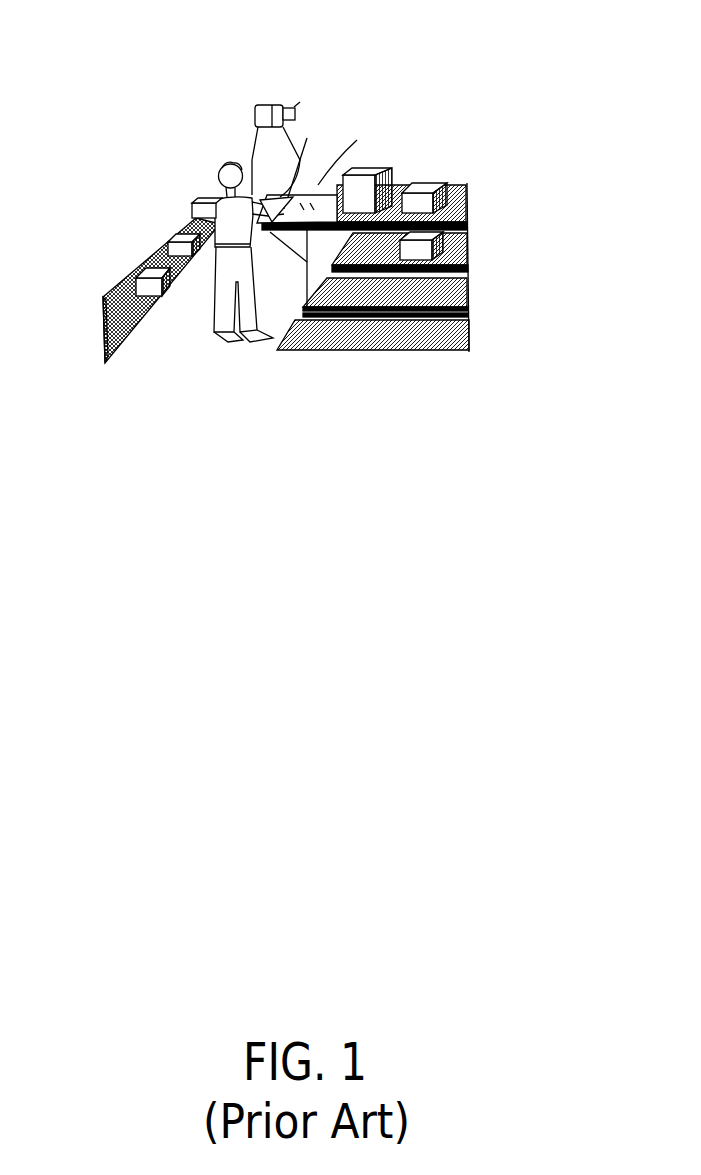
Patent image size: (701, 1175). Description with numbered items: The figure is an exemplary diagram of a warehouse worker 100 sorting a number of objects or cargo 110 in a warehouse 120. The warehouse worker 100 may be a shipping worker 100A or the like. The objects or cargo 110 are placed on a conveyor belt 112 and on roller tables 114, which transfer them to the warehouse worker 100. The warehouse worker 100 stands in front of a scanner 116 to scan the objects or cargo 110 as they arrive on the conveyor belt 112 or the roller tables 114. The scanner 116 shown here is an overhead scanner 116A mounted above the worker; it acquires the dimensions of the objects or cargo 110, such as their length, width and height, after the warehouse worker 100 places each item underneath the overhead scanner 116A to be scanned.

The warehouse worker 100 is at (210, 197).
The shipping worker 100A is at (187, 222).
The objects or cargo 110 is at (103, 243).
The conveyor belt 112 is at (471, 232).
The roller tables 114 is at (471, 283).
The scanner 116 is at (262, 107).
The overhead scanner 116A is at (282, 102).
The warehouse 120 is at (663, 214).